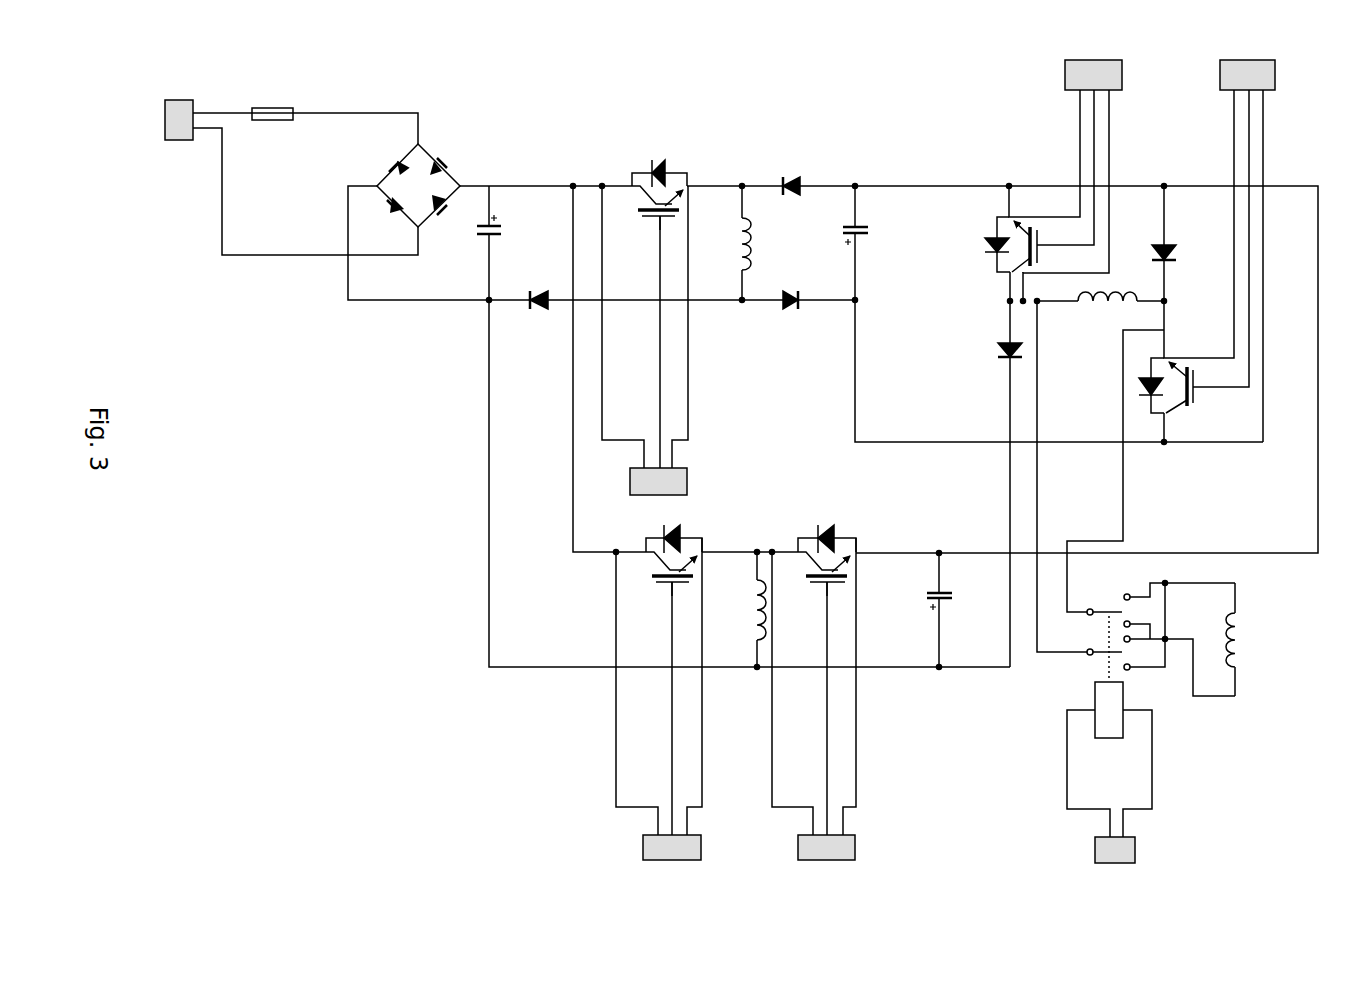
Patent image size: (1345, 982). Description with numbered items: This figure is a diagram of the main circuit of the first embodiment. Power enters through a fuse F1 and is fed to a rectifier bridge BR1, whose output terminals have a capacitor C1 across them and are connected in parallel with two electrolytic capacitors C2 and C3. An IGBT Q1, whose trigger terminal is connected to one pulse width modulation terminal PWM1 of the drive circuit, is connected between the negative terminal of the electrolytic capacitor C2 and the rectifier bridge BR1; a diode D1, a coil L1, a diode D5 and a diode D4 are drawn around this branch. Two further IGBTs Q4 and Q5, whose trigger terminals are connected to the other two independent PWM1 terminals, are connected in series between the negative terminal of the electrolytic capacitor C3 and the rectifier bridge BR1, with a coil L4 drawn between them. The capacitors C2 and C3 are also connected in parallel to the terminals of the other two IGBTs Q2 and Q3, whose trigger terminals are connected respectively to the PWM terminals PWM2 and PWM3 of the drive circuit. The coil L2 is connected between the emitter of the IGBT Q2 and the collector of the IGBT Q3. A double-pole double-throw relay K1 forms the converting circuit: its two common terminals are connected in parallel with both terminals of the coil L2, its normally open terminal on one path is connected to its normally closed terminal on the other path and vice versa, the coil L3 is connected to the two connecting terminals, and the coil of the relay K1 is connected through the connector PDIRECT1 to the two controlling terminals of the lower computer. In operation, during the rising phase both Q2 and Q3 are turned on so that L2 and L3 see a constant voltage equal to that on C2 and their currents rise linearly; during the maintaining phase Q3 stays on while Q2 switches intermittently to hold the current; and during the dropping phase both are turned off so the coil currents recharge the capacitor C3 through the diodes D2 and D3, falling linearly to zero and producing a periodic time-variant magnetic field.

The fuse F1 is at (272, 104).
The rectifier bridge BR1 is at (420, 187).
The capacitor C1 is at (497, 220).
The diode D4 is at (535, 285).
The IGBT Q1 is at (658, 178).
The diode D1 is at (787, 172).
The inductor L1 is at (759, 244).
The diode D5 is at (793, 287).
The electrolytic capacitor C2 is at (872, 243).
The pulse width modulation terminal PWM1 is at (742, 681).
The IGBT Q4 is at (663, 555).
The inductor L4 is at (747, 610).
The IGBT Q5 is at (827, 544).
The electrolytic capacitor C3 is at (955, 600).
The PWM terminal PWM3 is at (1093, 62).
The PWM terminal PWM2 is at (1247, 62).
The IGBT Q3 is at (998, 242).
The diode D3 is at (1180, 247).
The diode D2 is at (995, 342).
The coil L2 is at (1107, 312).
The IGBT Q2 is at (1186, 390).
The DPDT relay K1 is at (1151, 710).
The coil L3 is at (1242, 639).
The direct power connector PDIRECT1 is at (1119, 865).